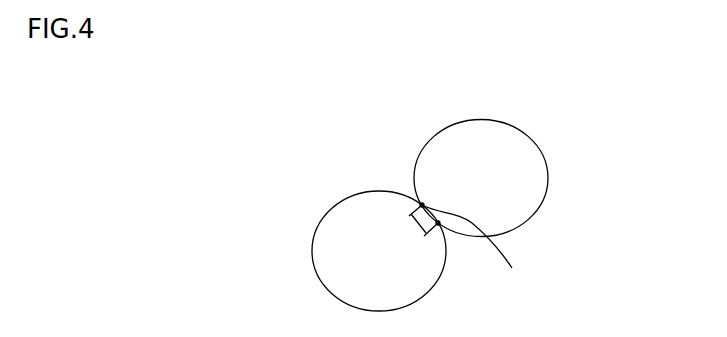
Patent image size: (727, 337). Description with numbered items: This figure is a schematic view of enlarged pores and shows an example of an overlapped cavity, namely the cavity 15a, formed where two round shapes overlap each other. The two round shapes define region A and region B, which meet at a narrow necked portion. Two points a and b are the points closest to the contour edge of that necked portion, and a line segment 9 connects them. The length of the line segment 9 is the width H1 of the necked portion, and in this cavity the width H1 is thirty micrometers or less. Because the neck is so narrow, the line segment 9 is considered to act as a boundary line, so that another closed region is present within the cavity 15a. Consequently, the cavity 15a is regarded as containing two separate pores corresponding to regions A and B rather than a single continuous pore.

The cavity 15a is at (419, 184).
The region A is at (495, 162).
The region B is at (343, 234).
The point a is at (422, 205).
The point b is at (438, 223).
The line segment 9 is at (473, 248).
The width of the necked portion H1 is at (413, 216).